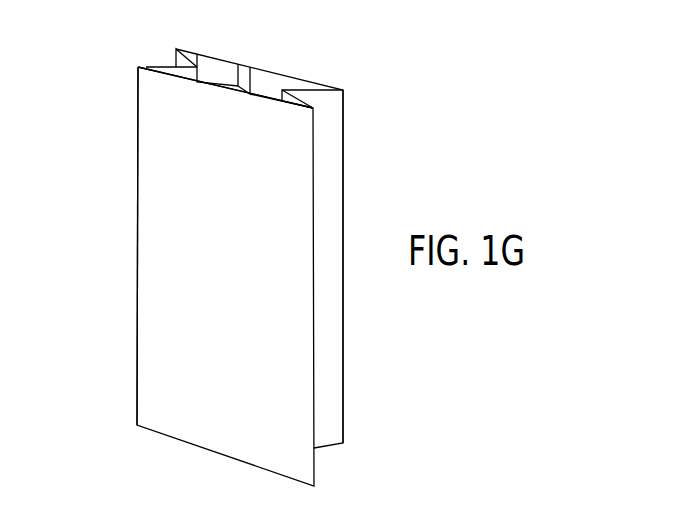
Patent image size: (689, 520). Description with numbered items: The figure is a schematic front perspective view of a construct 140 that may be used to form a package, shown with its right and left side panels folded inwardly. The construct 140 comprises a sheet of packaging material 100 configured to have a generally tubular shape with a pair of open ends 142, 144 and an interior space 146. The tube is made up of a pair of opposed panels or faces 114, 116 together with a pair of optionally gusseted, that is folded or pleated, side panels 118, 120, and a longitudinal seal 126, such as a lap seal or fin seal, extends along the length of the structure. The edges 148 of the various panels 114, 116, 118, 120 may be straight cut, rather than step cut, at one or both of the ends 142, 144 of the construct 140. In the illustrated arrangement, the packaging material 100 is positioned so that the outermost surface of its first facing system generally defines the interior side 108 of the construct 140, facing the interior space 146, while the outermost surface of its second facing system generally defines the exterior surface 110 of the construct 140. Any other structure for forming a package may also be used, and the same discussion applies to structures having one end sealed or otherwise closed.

The packaging material 100 is at (355, 333).
The interior side 108 is at (217, 70).
The exterior surface 110 is at (236, 244).
The panel 114 is at (140, 158).
The panel 116 is at (193, 51).
The side panel 118 is at (176, 56).
The side panel 120 is at (343, 167).
The longitudinal seal 126 is at (245, 67).
The construct 140 is at (412, 61).
The open end 142 is at (106, 418).
The open end 144 is at (108, 58).
The interior space 146 is at (268, 75).
The edges 148 is at (312, 86).